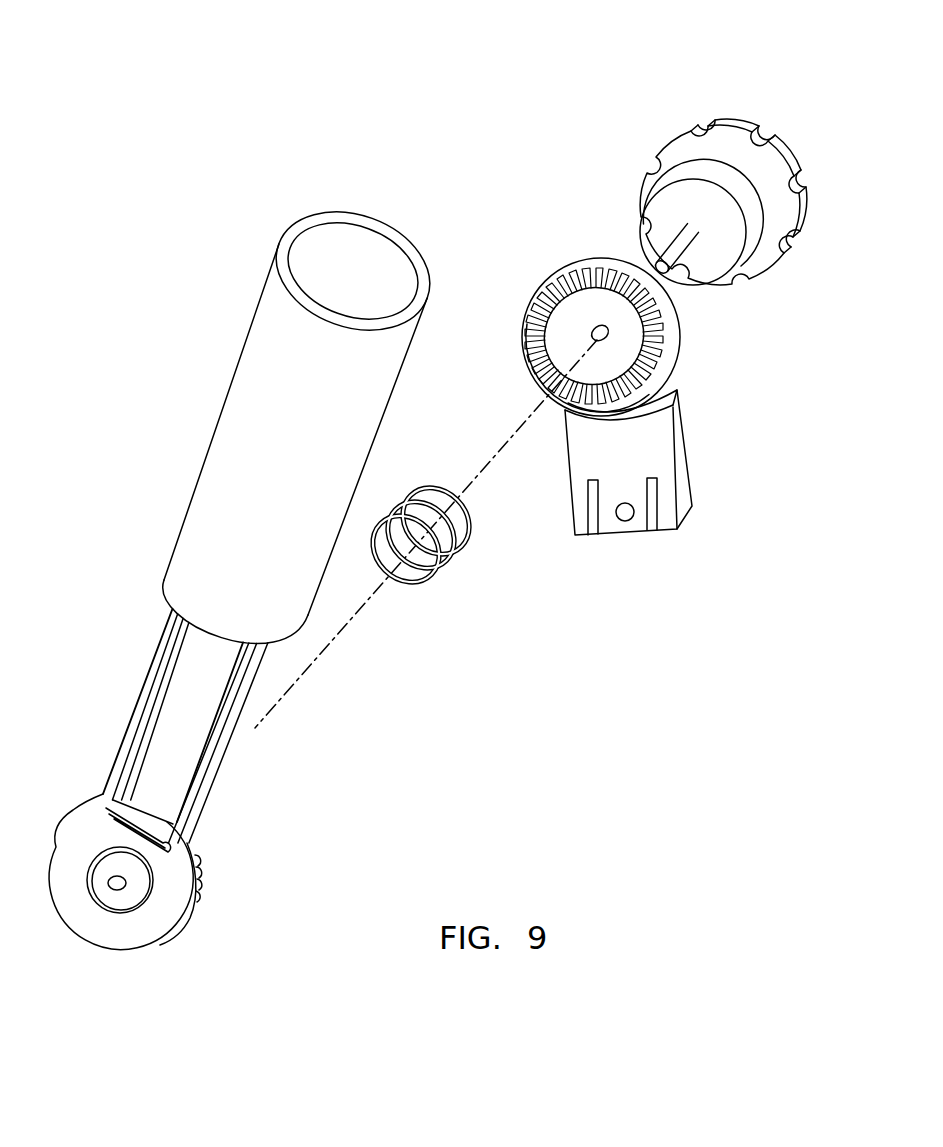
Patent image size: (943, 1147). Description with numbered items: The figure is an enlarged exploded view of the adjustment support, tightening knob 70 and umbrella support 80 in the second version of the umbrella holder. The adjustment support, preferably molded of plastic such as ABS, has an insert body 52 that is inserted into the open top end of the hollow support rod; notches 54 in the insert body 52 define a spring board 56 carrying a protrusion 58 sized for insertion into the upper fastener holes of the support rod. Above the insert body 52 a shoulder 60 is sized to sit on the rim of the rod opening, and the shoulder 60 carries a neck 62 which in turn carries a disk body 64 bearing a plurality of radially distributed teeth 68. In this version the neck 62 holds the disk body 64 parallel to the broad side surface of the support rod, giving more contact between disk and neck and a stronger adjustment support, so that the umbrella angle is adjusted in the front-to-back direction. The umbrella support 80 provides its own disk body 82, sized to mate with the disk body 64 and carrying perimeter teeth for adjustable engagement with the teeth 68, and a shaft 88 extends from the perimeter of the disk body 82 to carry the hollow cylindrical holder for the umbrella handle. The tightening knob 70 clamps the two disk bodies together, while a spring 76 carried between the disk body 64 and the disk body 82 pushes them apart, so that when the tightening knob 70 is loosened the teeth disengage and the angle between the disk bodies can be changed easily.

The insert body 52 is at (683, 503).
The notches 54 is at (655, 537).
The spring board 56 is at (640, 538).
The protrusion 58 is at (626, 512).
The shoulder 60 is at (683, 422).
The neck 62 is at (680, 387).
The disk body 64 is at (680, 320).
The teeth 68 is at (535, 292).
The tightening knob 70 is at (766, 130).
The spring 76 is at (437, 583).
The umbrella support 80 is at (175, 453).
The disk body 82 is at (118, 925).
The shaft 88 is at (240, 748).